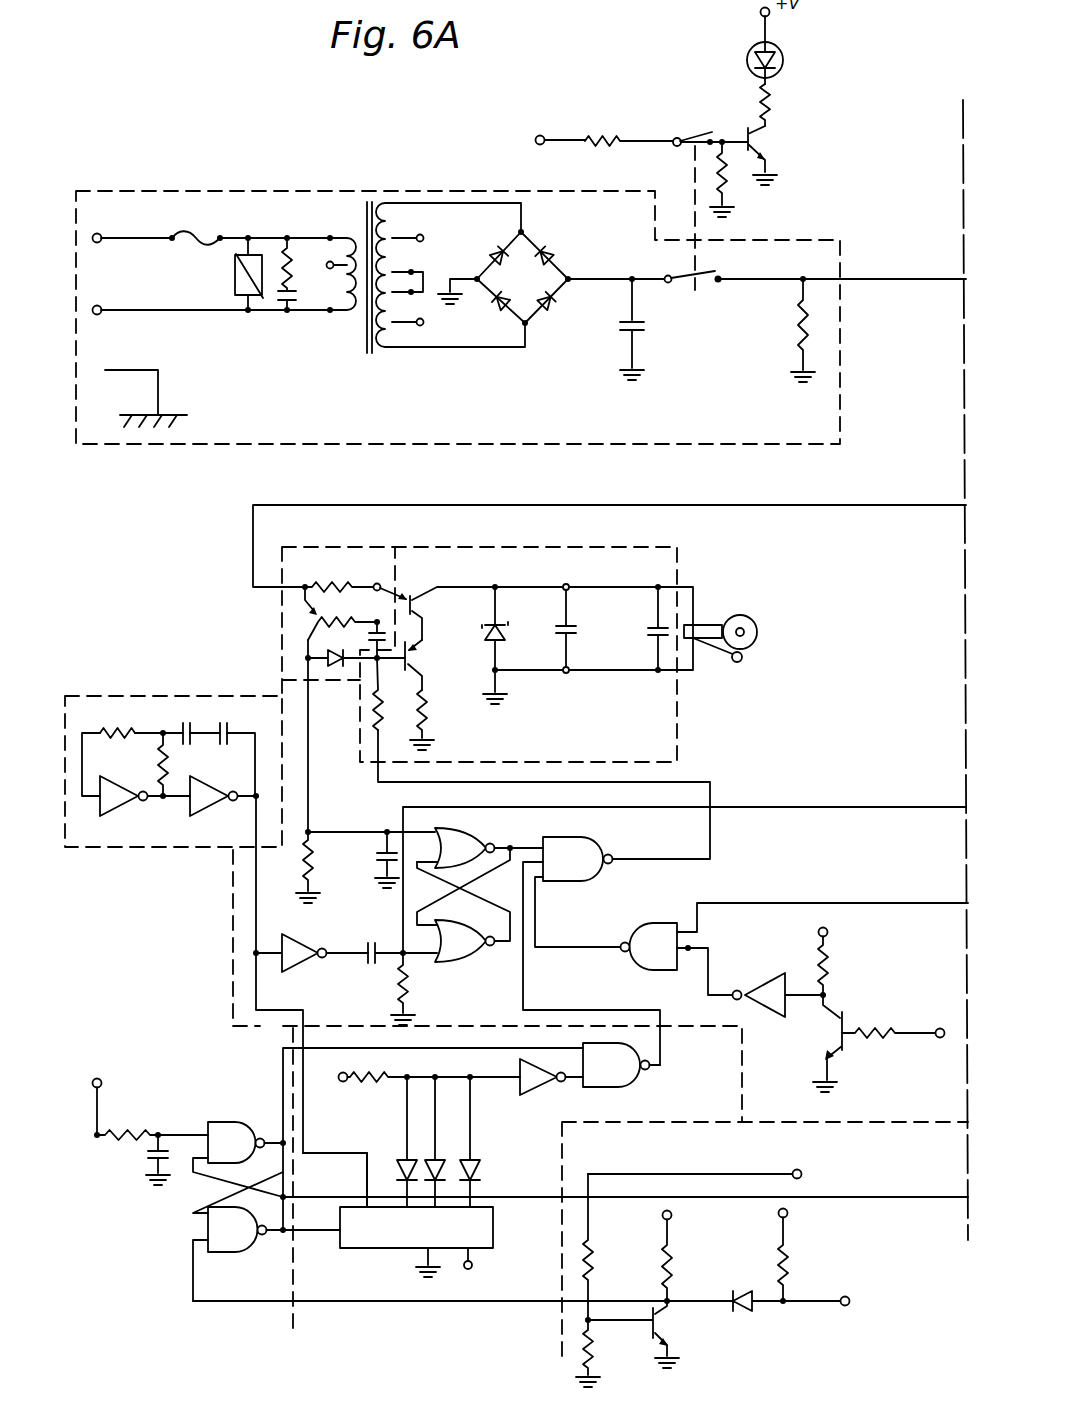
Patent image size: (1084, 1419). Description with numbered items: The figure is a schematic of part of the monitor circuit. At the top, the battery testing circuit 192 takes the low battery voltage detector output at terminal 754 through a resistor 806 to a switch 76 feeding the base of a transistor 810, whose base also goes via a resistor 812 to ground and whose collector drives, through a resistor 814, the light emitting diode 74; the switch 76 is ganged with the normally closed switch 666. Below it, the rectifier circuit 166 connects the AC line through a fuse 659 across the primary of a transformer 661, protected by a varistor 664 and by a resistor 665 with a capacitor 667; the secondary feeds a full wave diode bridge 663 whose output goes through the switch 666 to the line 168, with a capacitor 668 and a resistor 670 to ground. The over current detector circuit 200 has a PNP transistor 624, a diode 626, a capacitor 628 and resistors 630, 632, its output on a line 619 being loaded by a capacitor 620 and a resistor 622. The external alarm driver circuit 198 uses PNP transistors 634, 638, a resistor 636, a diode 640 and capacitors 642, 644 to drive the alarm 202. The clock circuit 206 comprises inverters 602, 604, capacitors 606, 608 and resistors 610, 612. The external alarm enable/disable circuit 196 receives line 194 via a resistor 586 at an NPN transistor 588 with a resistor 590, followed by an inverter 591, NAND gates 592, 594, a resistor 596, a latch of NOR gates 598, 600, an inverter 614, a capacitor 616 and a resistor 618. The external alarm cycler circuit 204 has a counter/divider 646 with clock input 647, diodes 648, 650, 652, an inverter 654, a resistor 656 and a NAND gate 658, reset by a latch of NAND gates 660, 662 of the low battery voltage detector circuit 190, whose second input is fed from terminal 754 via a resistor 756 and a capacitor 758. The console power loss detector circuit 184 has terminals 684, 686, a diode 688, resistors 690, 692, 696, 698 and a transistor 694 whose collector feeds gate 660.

The light emitting diode 74 is at (784, 59).
The switch 76 is at (708, 126).
The rectifier circuit 166 is at (300, 142).
The line 168 is at (912, 243).
The console power loss detector circuit 184 is at (704, 1161).
The low battery voltage detector circuit 190 is at (136, 1058).
The battery testing circuit 192 is at (683, 97).
The line 194 is at (925, 1028).
The external alarm enable/disable circuit 196 is at (233, 948).
The external alarm driver circuit 198 is at (677, 725).
The over current detector circuit 200 is at (345, 520).
The alarm 202 is at (772, 620).
The external alarm cycler circuit 204 is at (565, 1151).
The clock circuit 206 is at (180, 658).
The resistor 586 is at (888, 1018).
The NPN transistor 588 is at (806, 1043).
The resistor 590 is at (849, 955).
The inverter 591 is at (778, 984).
The three input NAND gate 592 is at (676, 964).
The three input NAND gate 594 is at (590, 876).
The resistor 596 is at (383, 712).
The two input NOR gate 598 is at (459, 818).
The two input NOR gate 600 is at (486, 955).
The inverter 602 is at (125, 810).
The inverter 604 is at (213, 810).
The capacitor 606 is at (228, 723).
The capacitor 608 is at (179, 723).
The resistor 610 is at (117, 720).
The resistor 612 is at (187, 764).
The inverter 614 is at (310, 943).
The capacitor 616 is at (375, 939).
The resistor 618 is at (424, 989).
The line 619 is at (310, 800).
The capacitor 620 is at (364, 860).
The resistor 622 is at (290, 867).
The PNP transistor 624 is at (297, 616).
The diode 626 is at (340, 672).
The capacitor 628 is at (378, 638).
The resistor 630 is at (344, 616).
The resistor 632 is at (341, 576).
The PNP transistor 634 is at (434, 665).
The resistor 636 is at (443, 720).
The PNP transistor 638 is at (437, 600).
The diode 640 is at (472, 644).
The capacitor 642 is at (544, 638).
The capacitor 644 is at (638, 628).
The 12-stage ripple-carry binary counter/divider 646 is at (432, 1245).
The clock input 647 is at (368, 1176).
The diode 648 is at (398, 1168).
The diode 650 is at (440, 1160).
The diode 652 is at (476, 1163).
The inverter 654 is at (550, 1094).
The resistor 656 is at (416, 1066).
The two input NAND gate 658 is at (621, 1065).
The fuse 659 is at (206, 223).
The NAND gate 660 is at (245, 1252).
The transformer 661 is at (364, 354).
The NAND gate 662 is at (266, 1097).
The full wave diode bridge 663 is at (548, 326).
The varistor 664 is at (237, 285).
The resistor 665 is at (285, 248).
The normally closed switch 666 is at (688, 288).
The capacitor 667 is at (314, 300).
The capacitor 668 is at (605, 328).
The resistor 670 is at (780, 329).
The terminal 684 is at (844, 1303).
The terminal 686 is at (722, 1175).
The diode 688 is at (725, 1322).
The resistor 690 is at (809, 1253).
The resistor 692 is at (613, 1248).
The transistor 694 is at (651, 1334).
The resistor 696 is at (609, 1353).
The resistor 698 is at (691, 1254).
The terminal 754 is at (325, 619).
The resistor 756 is at (151, 1121).
The capacitor 758 is at (134, 1160).
The resistor 806 is at (609, 124).
The transistor 810 is at (782, 155).
The resistor 812 is at (730, 172).
The resistor 814 is at (792, 103).